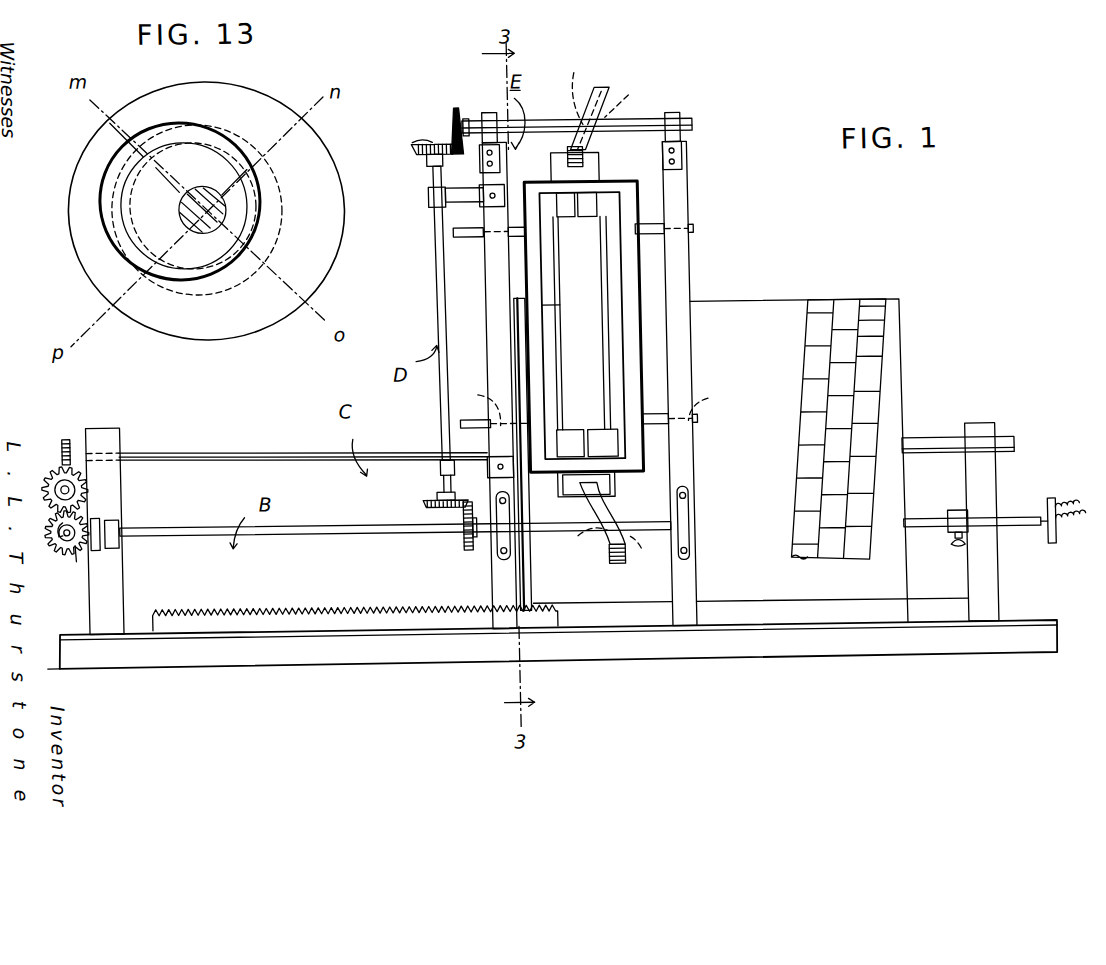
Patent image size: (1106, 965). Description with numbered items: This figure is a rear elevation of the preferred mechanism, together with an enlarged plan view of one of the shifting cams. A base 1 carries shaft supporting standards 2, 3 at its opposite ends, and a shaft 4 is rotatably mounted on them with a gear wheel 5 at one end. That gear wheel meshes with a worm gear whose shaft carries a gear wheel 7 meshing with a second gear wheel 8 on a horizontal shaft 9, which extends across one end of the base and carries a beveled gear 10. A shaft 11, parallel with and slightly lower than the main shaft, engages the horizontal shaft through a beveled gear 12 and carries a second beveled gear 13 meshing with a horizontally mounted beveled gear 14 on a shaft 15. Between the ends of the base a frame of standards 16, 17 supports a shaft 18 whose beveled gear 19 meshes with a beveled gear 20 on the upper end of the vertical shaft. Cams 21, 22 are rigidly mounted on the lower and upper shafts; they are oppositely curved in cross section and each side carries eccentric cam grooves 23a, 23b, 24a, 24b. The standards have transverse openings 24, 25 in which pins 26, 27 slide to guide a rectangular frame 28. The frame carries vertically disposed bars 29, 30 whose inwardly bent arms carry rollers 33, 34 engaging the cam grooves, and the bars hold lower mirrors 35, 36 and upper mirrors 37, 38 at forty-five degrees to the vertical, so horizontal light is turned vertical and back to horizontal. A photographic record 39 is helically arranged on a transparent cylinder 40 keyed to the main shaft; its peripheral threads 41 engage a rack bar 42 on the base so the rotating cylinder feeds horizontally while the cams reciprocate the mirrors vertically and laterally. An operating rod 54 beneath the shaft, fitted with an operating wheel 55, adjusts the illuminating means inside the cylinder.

In FIG. 1, the base 1 is at (604, 656).
In FIG. 1, the shaft supporting standard 2 is at (996, 606).
In FIG. 1, the shaft supporting standard 3 is at (116, 598).
In FIG. 1, the shaft 4 is at (254, 450).
In FIG. 1, the gear wheel 5 is at (66, 433).
In FIG. 1, the gear wheel 7 is at (52, 472).
In FIG. 1, the gear wheel 8 is at (58, 548).
In FIG. 1, the horizontal shaft 9 is at (84, 514).
In FIG. 1, the beveled gear 10 is at (73, 557).
In FIG. 1, the shaft 11 is at (324, 530).
In FIG. 1, the beveled gear 12 is at (86, 550).
In FIG. 1, the beveled gear 13 is at (460, 540).
In FIG. 1, the beveled gear 14 is at (421, 501).
In FIG. 1, the shaft 15 is at (440, 316).
In FIG. 1, the standard 16 is at (694, 296).
In FIG. 1, the standard 17 is at (492, 265).
In FIG. 13, the shaft 18 is at (186, 206).
In FIG. 1, the shaft 18 is at (684, 127).
In FIG. 1, the beveled gear 19 is at (463, 107).
In FIG. 1, the beveled gear 20 is at (440, 143).
In FIG. 1, the cam 21 is at (600, 565).
In FIG. 13, the cam 22 is at (256, 100).
In FIG. 1, the cam 22 is at (616, 86).
In FIG. 1, the eccentric cam groove 23a is at (581, 546).
In FIG. 1, the eccentric cam groove 23b is at (646, 554).
In FIG. 1, the transverse opening 24 is at (684, 234).
In FIG. 13, the eccentric cam groove 24a is at (218, 284).
In FIG. 1, the eccentric cam groove 24a is at (576, 86).
In FIG. 13, the eccentric cam groove 24b is at (278, 227).
In FIG. 1, the eccentric cam groove 24b is at (645, 98).
In FIG. 1, the transverse opening 25 is at (592, 402).
In FIG. 1, the pin 26 is at (456, 231).
In FIG. 1, the pin 27 is at (460, 423).
In FIG. 1, the frame 28 is at (640, 388).
In FIG. 1, the bar 29 is at (560, 340).
In FIG. 1, the bar 30 is at (603, 333).
In FIG. 1, the pin or roller 33 is at (557, 152).
In FIG. 1, the pin or roller 34 is at (605, 155).
In FIG. 1, the lower mirror 35 is at (597, 420).
In FIG. 1, the lower mirror 36 is at (569, 430).
In FIG. 1, the upper mirror 37 is at (594, 218).
In FIG. 1, the upper mirror 38 is at (570, 218).
In FIG. 1, the photographic record 39 is at (805, 472).
In FIG. 1, the transparent cylinder 40 is at (792, 305).
In FIG. 1, the peripheral threads 41 is at (528, 596).
In FIG. 1, the rack bar 42 is at (339, 606).
In FIG. 1, the operating rod 54 is at (917, 527).
In FIG. 1, the operating wheel 55 is at (1046, 505).